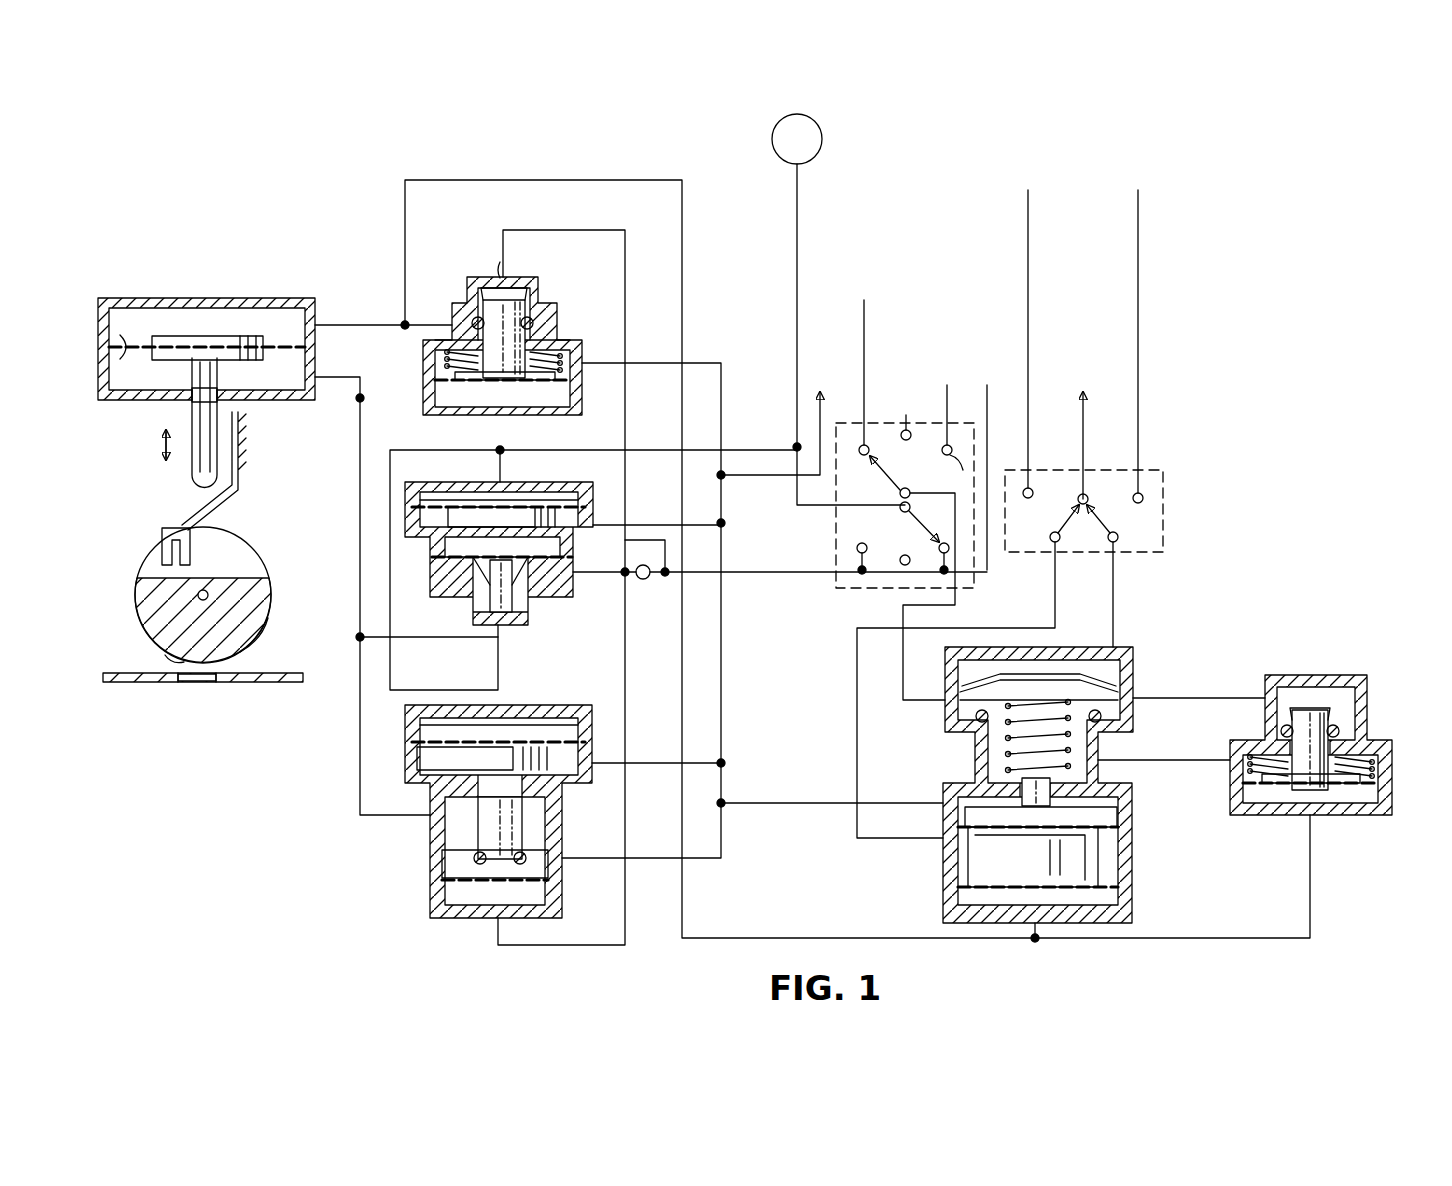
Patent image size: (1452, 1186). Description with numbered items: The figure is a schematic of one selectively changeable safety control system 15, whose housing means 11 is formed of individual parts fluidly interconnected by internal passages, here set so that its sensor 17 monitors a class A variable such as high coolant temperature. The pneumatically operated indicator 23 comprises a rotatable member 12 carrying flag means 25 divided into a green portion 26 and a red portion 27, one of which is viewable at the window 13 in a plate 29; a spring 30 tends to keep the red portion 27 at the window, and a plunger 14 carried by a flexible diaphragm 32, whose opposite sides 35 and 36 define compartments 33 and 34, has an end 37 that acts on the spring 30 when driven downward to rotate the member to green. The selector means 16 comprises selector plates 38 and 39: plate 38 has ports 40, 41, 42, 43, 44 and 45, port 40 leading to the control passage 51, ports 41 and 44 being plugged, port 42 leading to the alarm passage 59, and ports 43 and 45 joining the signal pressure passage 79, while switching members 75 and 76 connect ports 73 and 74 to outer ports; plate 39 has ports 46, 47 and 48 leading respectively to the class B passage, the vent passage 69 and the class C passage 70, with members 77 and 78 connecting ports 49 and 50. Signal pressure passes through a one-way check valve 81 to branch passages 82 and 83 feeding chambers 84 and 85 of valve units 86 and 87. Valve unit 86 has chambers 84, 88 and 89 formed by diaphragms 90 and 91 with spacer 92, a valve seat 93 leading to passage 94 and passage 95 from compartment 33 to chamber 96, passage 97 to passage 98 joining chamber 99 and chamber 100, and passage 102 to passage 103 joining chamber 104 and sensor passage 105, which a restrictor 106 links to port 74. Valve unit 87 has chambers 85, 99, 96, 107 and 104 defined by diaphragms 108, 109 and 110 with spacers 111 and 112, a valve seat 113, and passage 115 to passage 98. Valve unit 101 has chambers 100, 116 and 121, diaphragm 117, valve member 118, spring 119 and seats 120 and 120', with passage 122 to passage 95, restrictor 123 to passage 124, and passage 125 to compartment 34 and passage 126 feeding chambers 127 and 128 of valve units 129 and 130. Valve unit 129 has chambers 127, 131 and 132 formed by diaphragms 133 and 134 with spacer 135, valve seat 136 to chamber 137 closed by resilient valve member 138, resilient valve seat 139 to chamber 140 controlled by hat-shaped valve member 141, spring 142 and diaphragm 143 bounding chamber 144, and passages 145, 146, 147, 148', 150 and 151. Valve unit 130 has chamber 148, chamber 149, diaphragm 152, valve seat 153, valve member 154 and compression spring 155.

The housing means 11 is at (240, 298).
The rotatable member 12 is at (150, 592).
The window 13 is at (205, 684).
The plunger 14 is at (192, 412).
The system 15 is at (1268, 418).
The selector means 16 is at (1035, 560).
The sensor 17 is at (772, 139).
The pneumatically operated indicator 23 is at (152, 470).
The flag means 25 is at (240, 662).
The green portion 26 is at (268, 626).
The red portion 27 is at (160, 664).
The plate 29 is at (135, 684).
The spring 30 is at (234, 482).
The flexible diaphragm 32 is at (118, 345).
The compartment 33 is at (130, 375).
The compartment 34 is at (205, 336).
The side of the diaphragm 35 is at (118, 350).
The side of the diaphragm 36 is at (145, 345).
The end of the stem 37 is at (194, 488).
The selector plate 38 is at (833, 532).
The selector plate 39 is at (1165, 530).
The port 40 is at (866, 458).
The port 41 is at (901, 435).
The port 42 is at (958, 468).
The port 43 is at (856, 549).
The port 44 is at (903, 566).
The port 45 is at (938, 548).
The port 46 is at (1023, 488).
The port 47 is at (1080, 493).
The port 48 is at (1144, 498).
The port 49 is at (1117, 544).
The port 50 is at (1059, 543).
The control passage 51 is at (857, 414).
The passage 59 is at (947, 445).
The passage 69 is at (770, 482).
The passage 70 is at (1142, 462).
The port 73 is at (899, 494).
The port 74 is at (911, 507).
The fluid switching member 75 is at (888, 476).
The fluid switching member 76 is at (875, 540).
The fluid transmitting member 77 is at (1097, 512).
The fluid transmitting member 78 is at (1062, 506).
The signal pressure passage 79 is at (770, 573).
The one-way check valve 81 is at (646, 580).
The branch passage 82 is at (572, 585).
The branch passage 83 is at (582, 945).
The chamber 84 is at (547, 596).
The chamber 85 is at (546, 894).
The valve unit 86 is at (570, 480).
The valve unit 87 is at (602, 706).
The chamber 88 is at (452, 565).
The chamber 89 is at (485, 497).
The flexible diaphragm 90 is at (560, 557).
The flexible diaphragm 91 is at (560, 492).
The movable spacer 92 is at (452, 546).
The valve seat 93 is at (482, 590).
The passage 94 is at (436, 637).
The passage 95 is at (360, 687).
The chamber 96 is at (548, 818).
The passage 97 is at (636, 525).
The passage 98 is at (721, 667).
The chamber 99 is at (552, 870).
The chamber 100 is at (565, 373).
The valve unit 101 is at (552, 276).
The passage 102 is at (505, 463).
The passage 103 is at (435, 450).
The chamber 104 is at (535, 705).
The sensor passage 105 is at (797, 312).
The restrictor 106 is at (797, 504).
The chamber 107 is at (546, 788).
The flexible diaphragm 108 is at (462, 882).
The flexible diaphragm 109 is at (447, 805).
The flexible diaphragm 110 is at (428, 745).
The movable spacer 111 is at (478, 818).
The movable spacer 112 is at (405, 757).
The valve seat 113 is at (527, 856).
The passage 115 is at (652, 763).
The chamber 116 is at (565, 392).
The flexible diaphragm 117 is at (470, 400).
The valve member 118 is at (515, 347).
The compression spring 119 is at (450, 364).
The valve seat 120 is at (442, 335).
The valve seat 120' is at (579, 294).
The chamber 121 is at (482, 290).
The passage 122 is at (428, 386).
The restrictor 123 is at (500, 270).
The passage 124 is at (560, 230).
The passage 125 is at (362, 325).
The passage 126 is at (524, 180).
The chamber 127 is at (1110, 895).
The chamber 128 is at (1338, 812).
The valve unit 129 is at (1142, 646).
The valve unit 130 is at (1347, 656).
The chamber 131 is at (1110, 847).
The chamber 132 is at (1110, 806).
The flexible diaphragm 133 is at (960, 892).
The flexible diaphragm 134 is at (952, 824).
The movable spacer 135 is at (965, 852).
The valve seat 136 is at (985, 792).
The chamber 137 is at (985, 728).
The resilient valve member 138 is at (945, 791).
The resilient valve seat 139 is at (960, 714).
The chamber 140 is at (1110, 697).
The hat-shaped valve member 141 is at (975, 700).
The compression spring 142 is at (1112, 776).
The flexible diaphragm 143 is at (985, 686).
The chamber 144 is at (1115, 662).
The passage 145 is at (857, 733).
The passage 146 is at (812, 804).
The passage 147 is at (1162, 760).
The chamber 148 is at (1267, 782).
The passage 148' is at (1229, 673).
The chamber 149 is at (1310, 690).
The passage 150 is at (956, 610).
The passage 151 is at (1115, 612).
The flexible diaphragm 152 is at (1285, 806).
The valve seat 153 is at (1345, 742).
The valve member 154 is at (1302, 750).
The compression spring 155 is at (1262, 748).